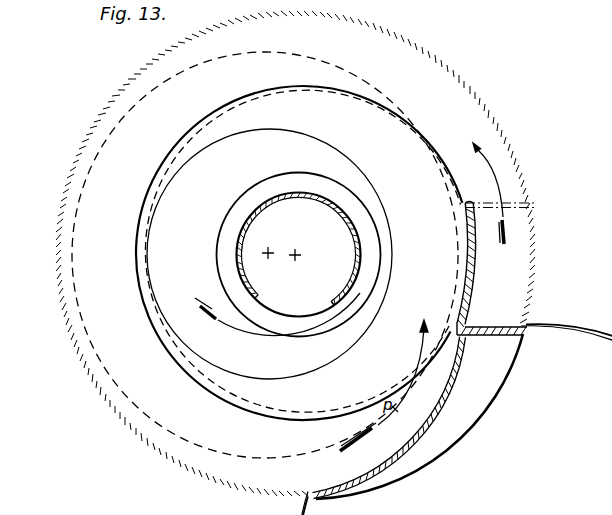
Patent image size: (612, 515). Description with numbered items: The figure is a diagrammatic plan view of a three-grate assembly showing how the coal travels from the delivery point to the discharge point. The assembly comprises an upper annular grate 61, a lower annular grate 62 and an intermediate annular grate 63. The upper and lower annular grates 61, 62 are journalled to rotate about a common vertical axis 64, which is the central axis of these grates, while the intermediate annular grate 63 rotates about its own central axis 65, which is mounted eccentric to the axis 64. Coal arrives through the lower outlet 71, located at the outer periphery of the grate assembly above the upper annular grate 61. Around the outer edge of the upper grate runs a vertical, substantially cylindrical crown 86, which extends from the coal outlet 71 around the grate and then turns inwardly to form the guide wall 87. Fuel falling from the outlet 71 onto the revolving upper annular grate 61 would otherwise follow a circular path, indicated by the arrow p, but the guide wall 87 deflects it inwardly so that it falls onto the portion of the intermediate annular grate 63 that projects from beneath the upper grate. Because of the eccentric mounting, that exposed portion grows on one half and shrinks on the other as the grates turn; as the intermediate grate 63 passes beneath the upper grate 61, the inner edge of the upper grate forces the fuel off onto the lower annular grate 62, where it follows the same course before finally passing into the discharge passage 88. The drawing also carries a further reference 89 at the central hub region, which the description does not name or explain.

The upper annular grate 61 is at (85, 277).
The lower annular grate 62 is at (193, 335).
The intermediate annular grate 63 is at (389, 150).
The common vertical axis 64 is at (302, 257).
The central axis of intermediate grate 65 is at (272, 250).
The lower outlet 71 is at (515, 282).
The crown 86 is at (85, 137).
The guide wall 87 is at (434, 407).
The discharge passage 88 is at (304, 297).
The hub ring 89 is at (230, 227).